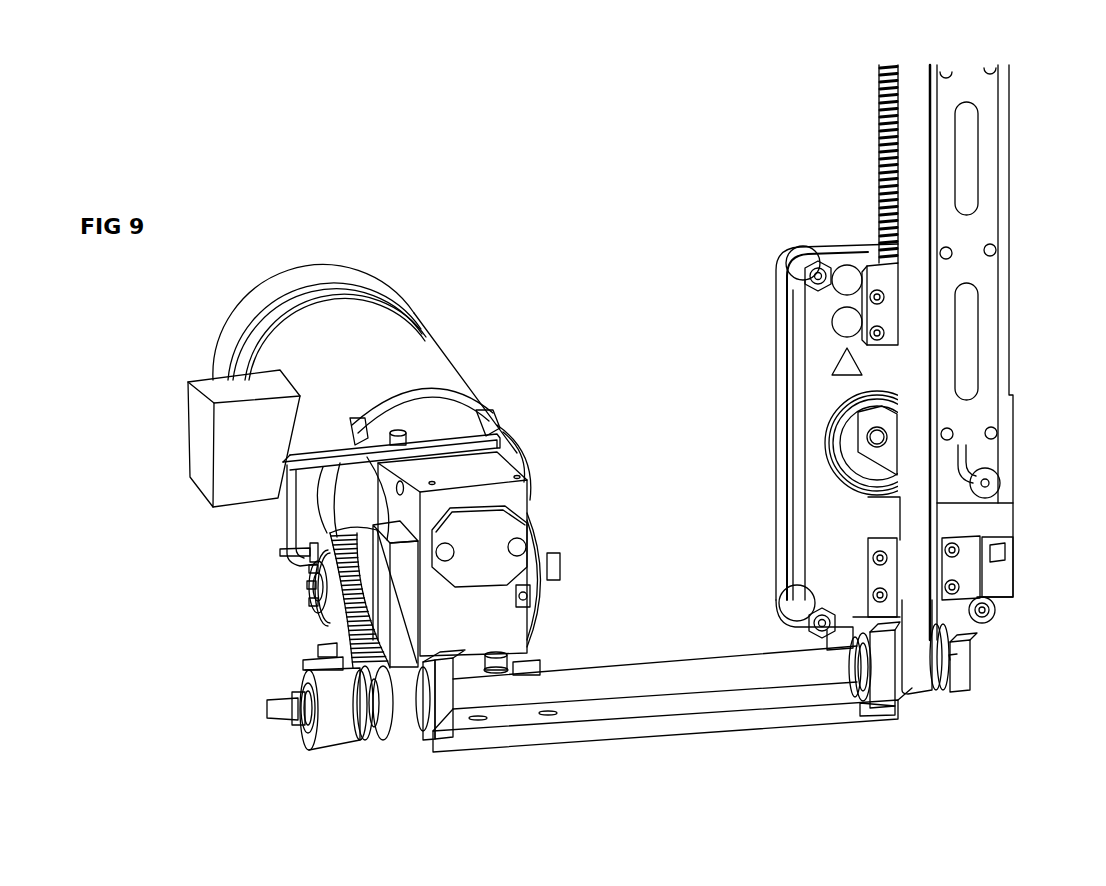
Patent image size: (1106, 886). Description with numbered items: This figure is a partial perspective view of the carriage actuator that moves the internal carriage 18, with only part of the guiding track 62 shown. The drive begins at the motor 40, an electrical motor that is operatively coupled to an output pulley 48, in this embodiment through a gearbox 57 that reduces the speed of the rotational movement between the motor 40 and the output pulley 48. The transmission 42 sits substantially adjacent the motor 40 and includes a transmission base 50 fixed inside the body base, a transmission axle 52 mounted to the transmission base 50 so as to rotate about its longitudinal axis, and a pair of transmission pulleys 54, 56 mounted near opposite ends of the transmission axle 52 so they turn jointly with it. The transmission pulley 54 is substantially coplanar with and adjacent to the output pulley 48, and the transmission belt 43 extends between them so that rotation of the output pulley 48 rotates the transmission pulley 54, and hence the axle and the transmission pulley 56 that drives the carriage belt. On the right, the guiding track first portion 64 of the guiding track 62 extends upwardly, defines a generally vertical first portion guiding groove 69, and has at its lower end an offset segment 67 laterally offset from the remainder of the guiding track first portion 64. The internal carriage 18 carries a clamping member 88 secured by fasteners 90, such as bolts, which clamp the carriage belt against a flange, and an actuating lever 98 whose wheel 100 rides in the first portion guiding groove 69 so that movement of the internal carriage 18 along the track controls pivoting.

The internal carriage 18 is at (813, 493).
The motor 40 is at (378, 347).
The transmission 42 is at (638, 737).
The transmission belt 43 is at (373, 590).
The output pulley 48 is at (333, 583).
The transmission base 50 is at (865, 712).
The transmission axle 52 is at (690, 678).
The transmission pulley 54 is at (382, 740).
The transmission pulley 56 is at (935, 697).
The gearbox 57 is at (517, 498).
The guiding track 62 is at (920, 116).
The guiding track first portion 64 is at (943, 163).
The offset segment 67 is at (960, 447).
The first portion guiding groove 69 is at (958, 187).
The clamping member 88 is at (883, 280).
The fasteners 90 is at (870, 337).
The actuating lever 98 is at (965, 453).
The wheel 100 is at (987, 485).